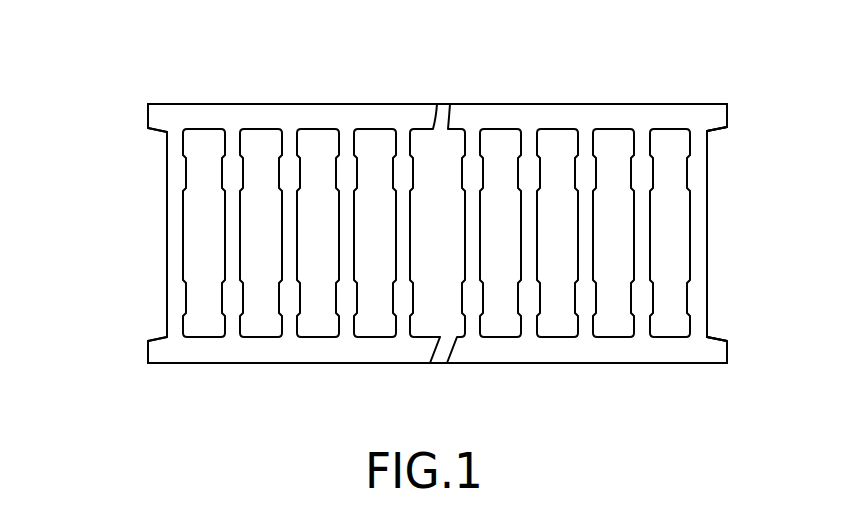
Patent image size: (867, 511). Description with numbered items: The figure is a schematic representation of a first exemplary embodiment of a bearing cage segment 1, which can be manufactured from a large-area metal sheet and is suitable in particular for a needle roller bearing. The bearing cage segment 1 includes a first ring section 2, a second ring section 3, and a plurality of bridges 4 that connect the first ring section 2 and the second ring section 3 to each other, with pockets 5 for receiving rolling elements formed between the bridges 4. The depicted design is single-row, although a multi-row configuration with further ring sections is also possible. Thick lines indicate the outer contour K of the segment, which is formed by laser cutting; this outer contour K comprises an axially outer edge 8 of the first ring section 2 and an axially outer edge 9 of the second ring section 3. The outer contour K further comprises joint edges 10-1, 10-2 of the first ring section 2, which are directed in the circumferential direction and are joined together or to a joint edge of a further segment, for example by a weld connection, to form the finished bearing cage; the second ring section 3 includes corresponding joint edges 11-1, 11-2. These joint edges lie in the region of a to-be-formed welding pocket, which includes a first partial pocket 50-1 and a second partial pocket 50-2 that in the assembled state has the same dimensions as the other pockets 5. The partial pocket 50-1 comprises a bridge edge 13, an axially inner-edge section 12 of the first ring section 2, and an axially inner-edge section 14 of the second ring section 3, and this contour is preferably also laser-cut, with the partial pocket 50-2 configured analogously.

The bearing cage segment 1 is at (191, 43).
The first ring section 2 is at (378, 120).
The second ring section 3 is at (336, 350).
The bridges 4 is at (644, 281).
The pockets 5 is at (558, 162).
The axially outer edge of the first ring section 8 is at (283, 101).
The axially outer edge of the second ring section 9 is at (253, 365).
The outer contour K is at (630, 105).
The joint edge of the first ring section 10-1 is at (727, 115).
The joint edge of the first ring section 10-2 is at (157, 116).
The joint edge of the second ring section 11-1 is at (727, 352).
The joint edge of the second ring section 11-2 is at (158, 346).
The axially inner-edge section of the first ring section 12 is at (720, 137).
The bridge edge 13 is at (708, 215).
The axially inner-edge section of the second ring section 14 is at (720, 332).
The first partial pocket 50-1 is at (710, 250).
The second partial pocket 50-2 is at (153, 268).